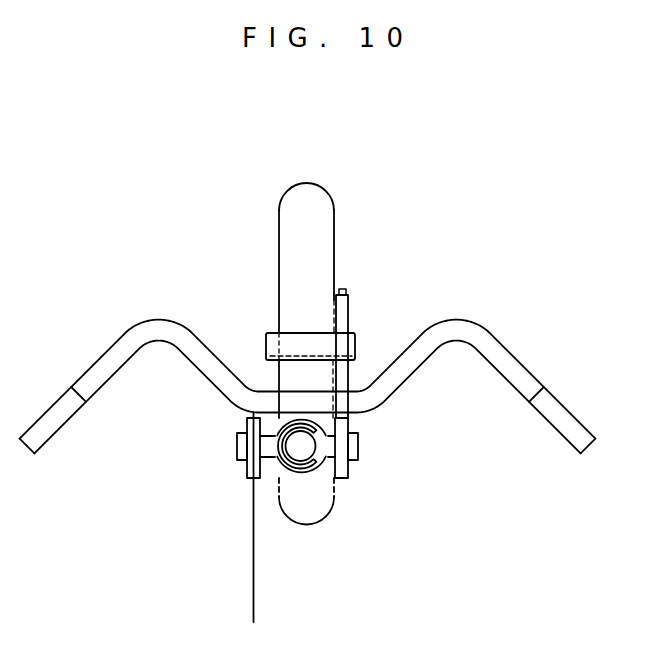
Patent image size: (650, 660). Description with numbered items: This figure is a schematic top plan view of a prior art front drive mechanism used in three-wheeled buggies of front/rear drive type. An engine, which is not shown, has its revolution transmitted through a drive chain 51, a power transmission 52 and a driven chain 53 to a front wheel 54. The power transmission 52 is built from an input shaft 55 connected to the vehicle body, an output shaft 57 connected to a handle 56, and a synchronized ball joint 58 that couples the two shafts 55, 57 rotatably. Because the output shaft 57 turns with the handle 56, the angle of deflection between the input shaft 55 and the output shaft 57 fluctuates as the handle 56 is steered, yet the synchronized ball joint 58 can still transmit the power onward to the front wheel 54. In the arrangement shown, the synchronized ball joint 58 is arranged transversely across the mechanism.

The drive chain 51 is at (253, 560).
The power transmission 52 is at (352, 483).
The driven chain 53 is at (349, 311).
The front wheel 54 is at (279, 242).
The input shaft 55 is at (237, 450).
The handle 56 is at (130, 330).
The output shaft 57 is at (358, 447).
The synchronized ball joint 58 is at (320, 464).